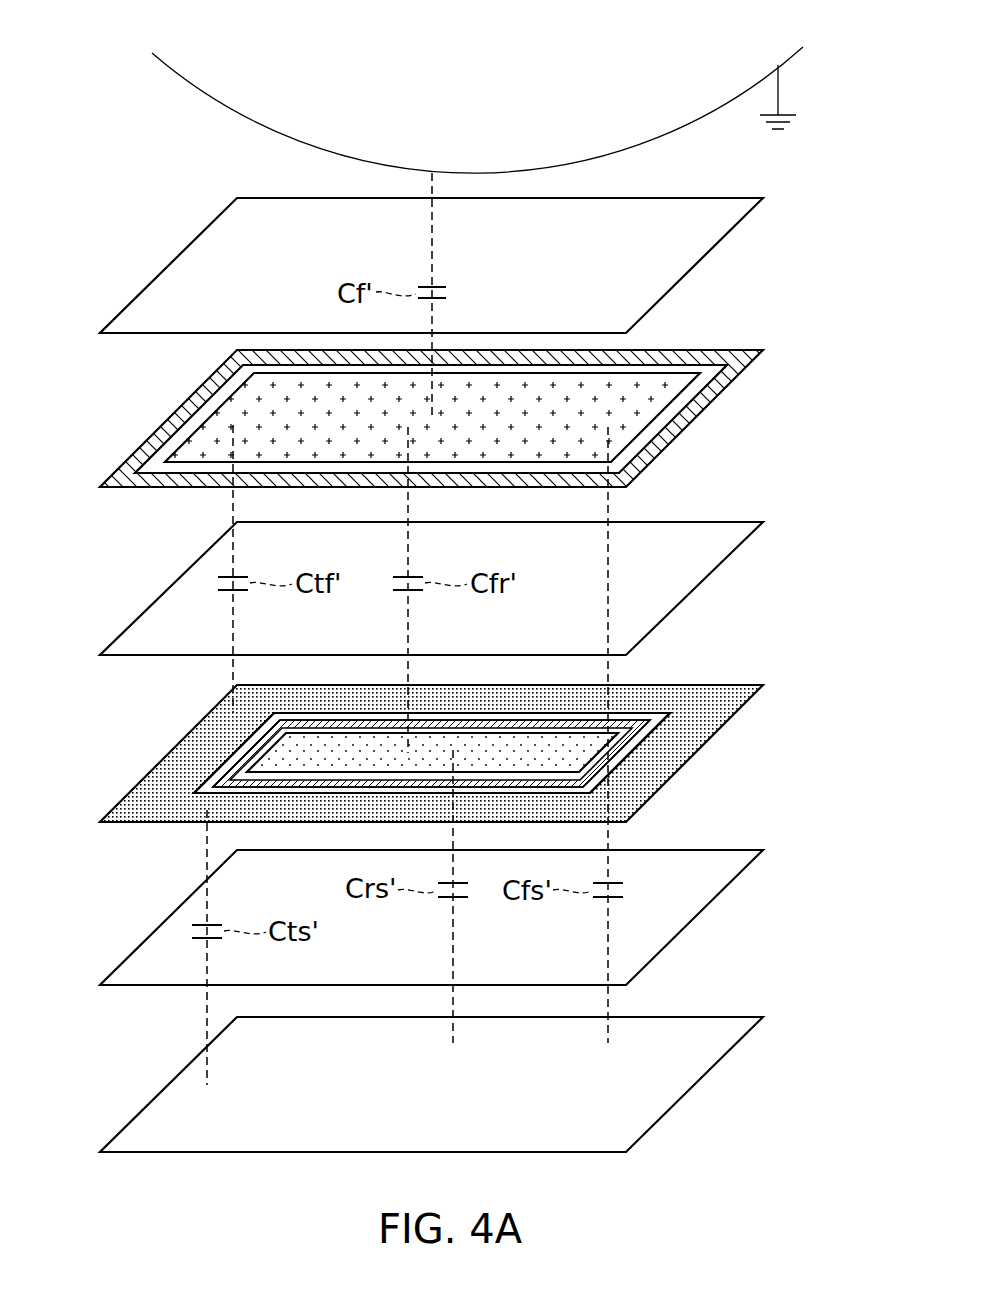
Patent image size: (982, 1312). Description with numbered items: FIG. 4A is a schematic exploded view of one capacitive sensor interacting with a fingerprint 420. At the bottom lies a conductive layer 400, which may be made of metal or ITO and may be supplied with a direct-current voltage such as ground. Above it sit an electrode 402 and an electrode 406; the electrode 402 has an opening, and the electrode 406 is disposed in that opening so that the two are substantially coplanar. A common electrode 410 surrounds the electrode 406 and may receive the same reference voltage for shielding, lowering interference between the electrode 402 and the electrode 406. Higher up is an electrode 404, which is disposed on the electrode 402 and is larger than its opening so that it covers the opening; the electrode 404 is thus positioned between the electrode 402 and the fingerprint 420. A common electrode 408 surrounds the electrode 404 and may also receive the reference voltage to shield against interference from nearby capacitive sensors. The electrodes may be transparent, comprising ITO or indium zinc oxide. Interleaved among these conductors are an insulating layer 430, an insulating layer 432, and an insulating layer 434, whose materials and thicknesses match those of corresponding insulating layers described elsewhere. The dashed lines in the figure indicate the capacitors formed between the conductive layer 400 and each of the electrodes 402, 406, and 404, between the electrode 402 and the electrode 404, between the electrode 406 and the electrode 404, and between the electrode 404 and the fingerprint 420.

The conductive layer 400 is at (700, 1081).
The electrode 402 is at (700, 750).
The electrode 404 is at (668, 352).
The electrode 406 is at (242, 753).
The common electrode 408 is at (700, 416).
The common electrode 410 is at (618, 750).
The fingerprint 420 is at (685, 125).
The insulating layer 430 is at (700, 913).
The insulating layer 432 is at (700, 586).
The insulating layer 434 is at (700, 263).